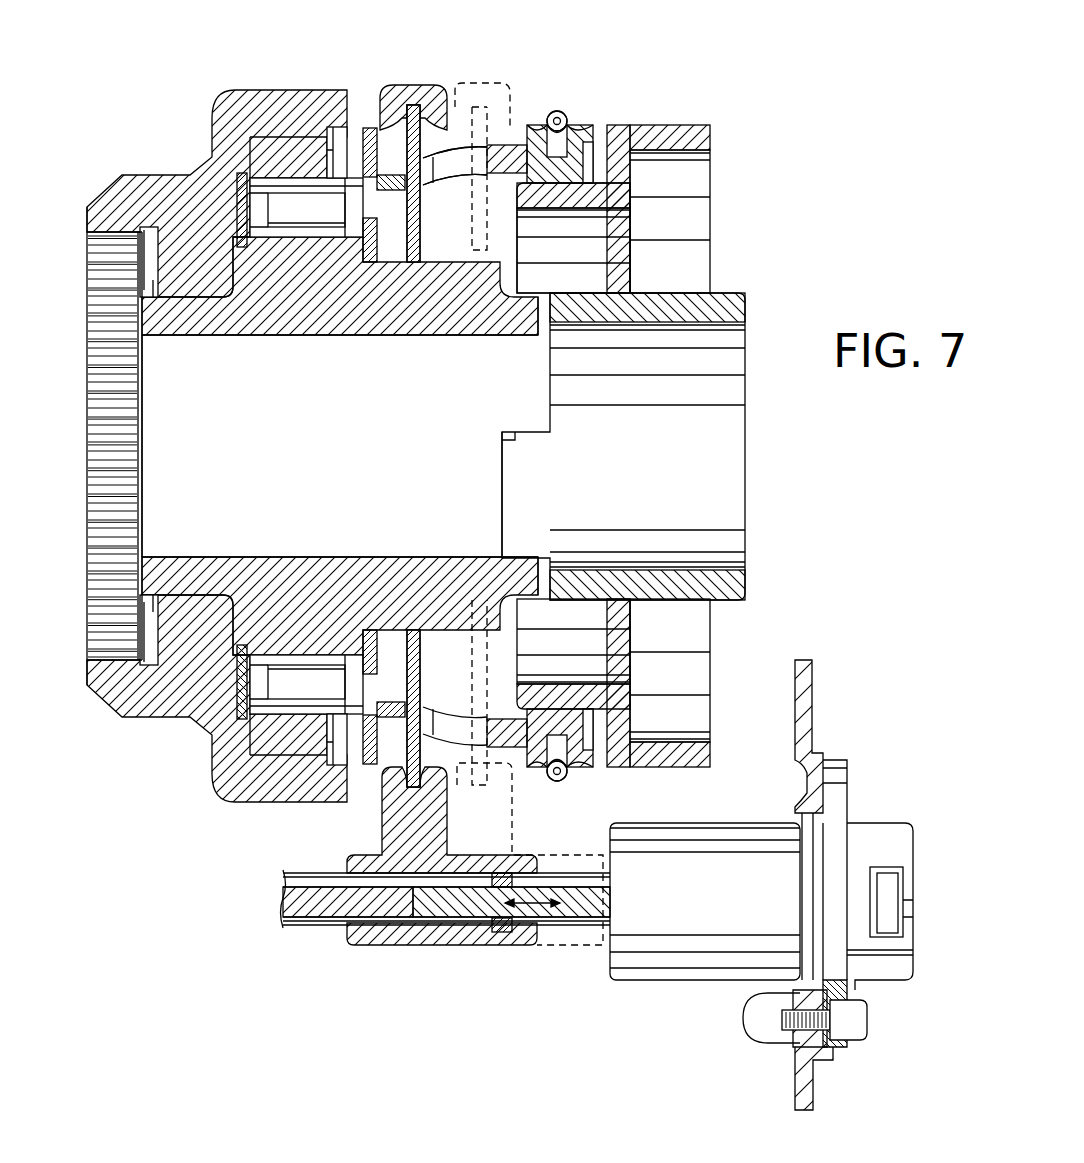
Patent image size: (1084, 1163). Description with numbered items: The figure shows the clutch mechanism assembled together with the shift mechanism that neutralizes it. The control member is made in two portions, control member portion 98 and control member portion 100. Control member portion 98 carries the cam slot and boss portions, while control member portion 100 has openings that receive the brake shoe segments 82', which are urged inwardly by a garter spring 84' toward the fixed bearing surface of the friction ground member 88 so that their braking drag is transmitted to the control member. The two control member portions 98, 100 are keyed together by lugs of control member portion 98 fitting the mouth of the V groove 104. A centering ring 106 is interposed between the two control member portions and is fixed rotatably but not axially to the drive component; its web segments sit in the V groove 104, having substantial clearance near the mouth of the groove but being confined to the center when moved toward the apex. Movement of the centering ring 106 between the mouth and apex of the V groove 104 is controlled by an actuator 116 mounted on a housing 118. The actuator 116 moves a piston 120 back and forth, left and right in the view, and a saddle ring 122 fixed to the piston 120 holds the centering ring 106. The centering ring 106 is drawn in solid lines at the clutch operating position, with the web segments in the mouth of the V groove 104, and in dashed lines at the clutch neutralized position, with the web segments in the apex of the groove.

The control member portion 98 is at (370, 122).
The saddle ring 122 is at (412, 85).
The centering ring 106 is at (421, 147).
The V groove 104 is at (452, 172).
The control member portion 100 is at (513, 130).
The garter spring 84' is at (574, 419).
The brake shoe segment 82' is at (598, 193).
The friction ground member 88 is at (621, 198).
The piston 120 is at (480, 905).
The housing 118 is at (813, 695).
The actuator 116 is at (685, 943).